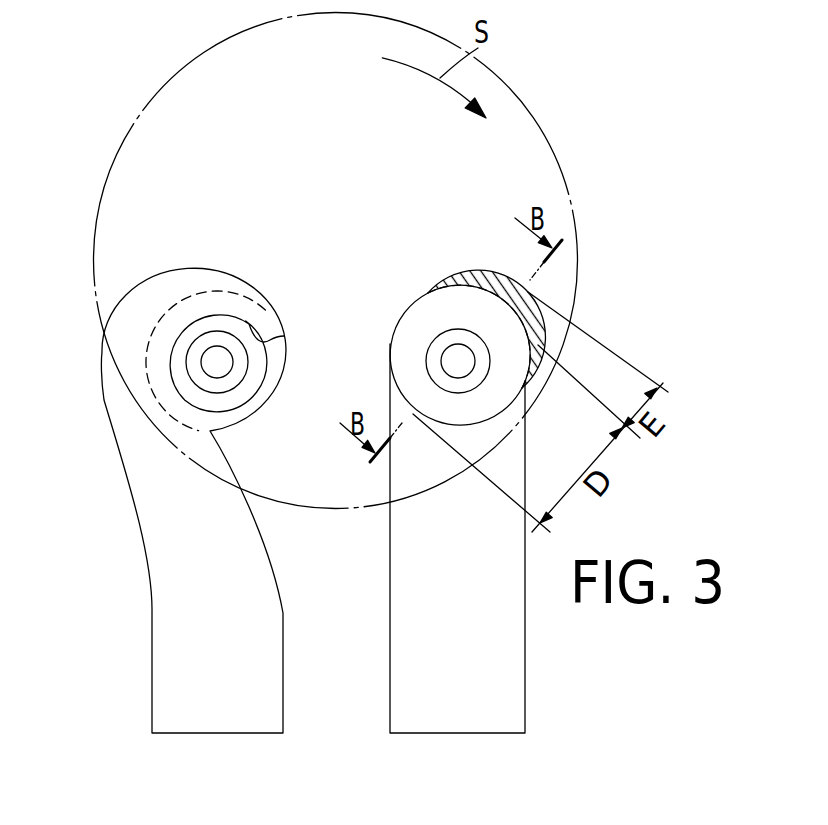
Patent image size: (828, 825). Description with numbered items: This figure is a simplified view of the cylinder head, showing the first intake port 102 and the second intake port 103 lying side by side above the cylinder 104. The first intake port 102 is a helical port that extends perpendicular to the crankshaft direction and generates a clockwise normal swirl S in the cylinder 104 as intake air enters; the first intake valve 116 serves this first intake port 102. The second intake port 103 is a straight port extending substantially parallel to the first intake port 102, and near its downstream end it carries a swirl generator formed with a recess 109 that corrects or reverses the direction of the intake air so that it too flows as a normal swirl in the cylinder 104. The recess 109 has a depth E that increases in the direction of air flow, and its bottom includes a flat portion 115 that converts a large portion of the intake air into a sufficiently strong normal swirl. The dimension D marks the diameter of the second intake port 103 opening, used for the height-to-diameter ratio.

The first intake port 102 is at (263, 692).
The second intake port 103 is at (505, 692).
The cylinder 104 is at (505, 125).
The recess 109 is at (473, 270).
The flat portion 115 is at (470, 375).
The first intake valve 116 is at (212, 364).